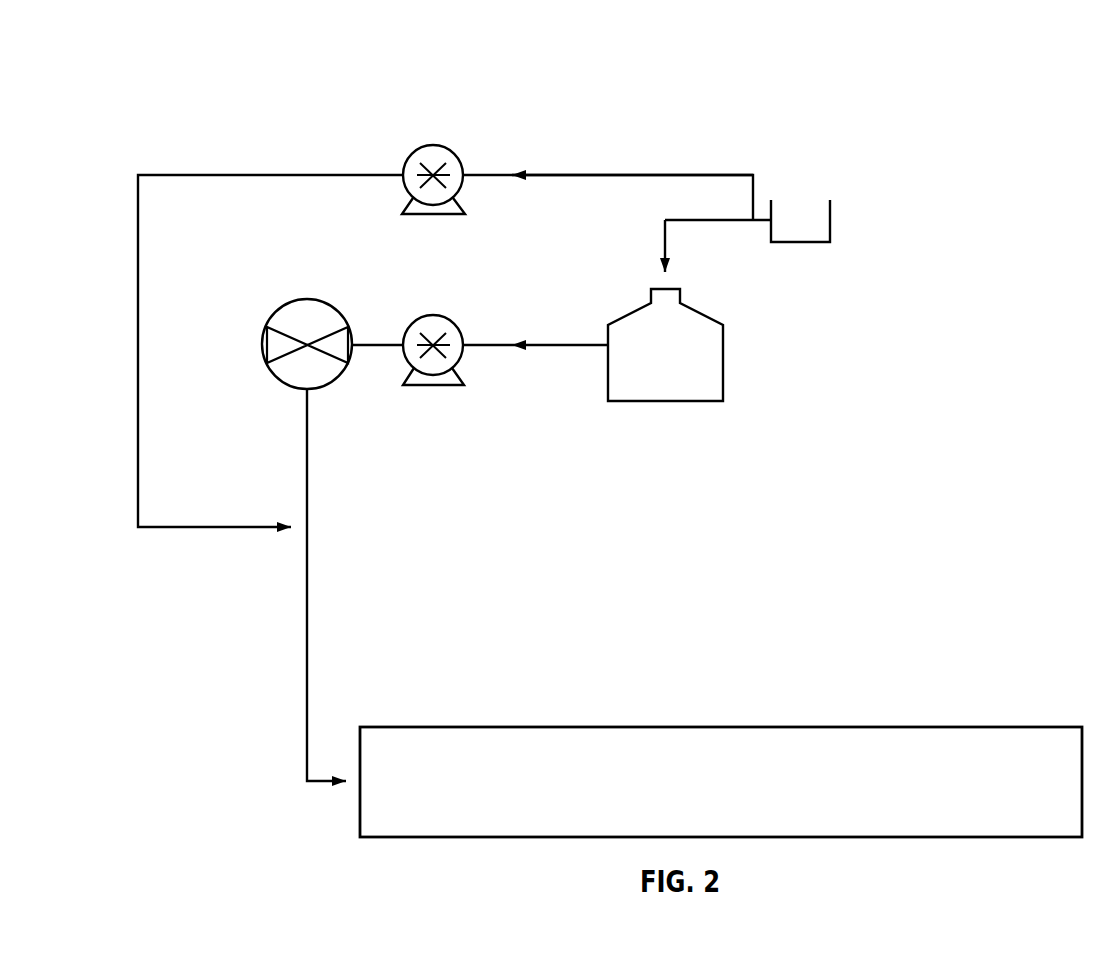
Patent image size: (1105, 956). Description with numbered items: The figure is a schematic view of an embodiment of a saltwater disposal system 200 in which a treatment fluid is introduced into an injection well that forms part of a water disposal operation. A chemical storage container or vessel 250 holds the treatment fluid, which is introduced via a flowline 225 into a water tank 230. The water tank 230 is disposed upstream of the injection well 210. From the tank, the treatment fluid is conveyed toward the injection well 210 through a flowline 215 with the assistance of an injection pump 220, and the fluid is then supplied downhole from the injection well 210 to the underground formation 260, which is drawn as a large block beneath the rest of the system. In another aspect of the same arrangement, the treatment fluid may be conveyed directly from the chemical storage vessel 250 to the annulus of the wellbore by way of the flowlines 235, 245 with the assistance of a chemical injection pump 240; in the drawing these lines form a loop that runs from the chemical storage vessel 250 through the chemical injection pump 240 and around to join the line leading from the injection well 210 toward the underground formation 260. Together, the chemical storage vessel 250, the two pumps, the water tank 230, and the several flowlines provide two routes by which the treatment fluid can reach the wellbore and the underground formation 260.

The saltwater disposal system 200 is at (180, 33).
The injection well 210 is at (279, 379).
The flowline 215 is at (540, 348).
The injection pump 220 is at (433, 315).
The flowline 225 is at (664, 233).
The water tank 230 is at (665, 403).
The flowline 235 is at (617, 175).
The chemical injection pump 240 is at (431, 144).
The flowline 245 is at (137, 267).
The chemical storage vessel 250 is at (795, 206).
The underground formation 260 is at (722, 727).